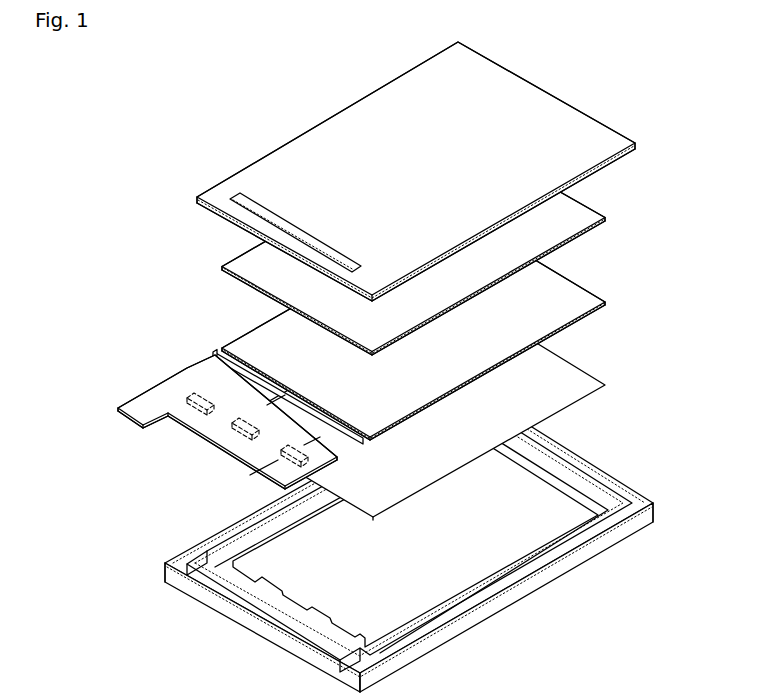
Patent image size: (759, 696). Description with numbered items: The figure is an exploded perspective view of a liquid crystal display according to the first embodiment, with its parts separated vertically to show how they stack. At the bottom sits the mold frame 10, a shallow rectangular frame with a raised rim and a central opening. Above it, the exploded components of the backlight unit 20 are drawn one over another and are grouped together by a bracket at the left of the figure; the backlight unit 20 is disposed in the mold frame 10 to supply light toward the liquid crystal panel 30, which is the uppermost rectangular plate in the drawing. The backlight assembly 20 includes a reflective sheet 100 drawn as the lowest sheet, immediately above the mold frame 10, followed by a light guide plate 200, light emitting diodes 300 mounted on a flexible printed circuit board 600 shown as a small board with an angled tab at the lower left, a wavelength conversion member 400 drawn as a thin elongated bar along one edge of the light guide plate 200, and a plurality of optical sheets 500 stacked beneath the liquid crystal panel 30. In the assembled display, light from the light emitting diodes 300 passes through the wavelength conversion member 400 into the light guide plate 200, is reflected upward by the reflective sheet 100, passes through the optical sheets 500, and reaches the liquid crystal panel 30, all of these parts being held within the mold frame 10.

The mold frame 10 is at (175, 545).
The backlight unit 20 is at (320, 327).
The liquid crystal panel 30 is at (267, 167).
The reflective sheet 100 is at (360, 497).
The light guide plate 200 is at (205, 366).
The light emitting diodes 300 is at (186, 404).
The wavelength conversion member 400 is at (215, 359).
The optical sheets 500 is at (278, 284).
The flexible printed circuit board 600 is at (177, 383).